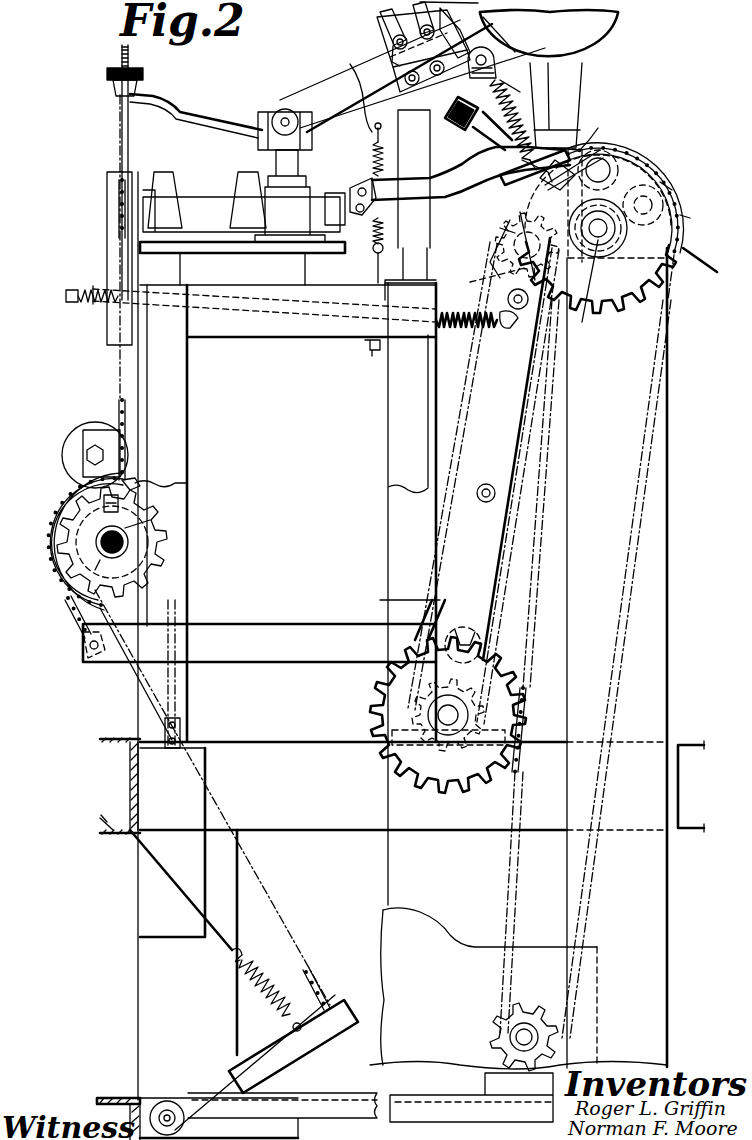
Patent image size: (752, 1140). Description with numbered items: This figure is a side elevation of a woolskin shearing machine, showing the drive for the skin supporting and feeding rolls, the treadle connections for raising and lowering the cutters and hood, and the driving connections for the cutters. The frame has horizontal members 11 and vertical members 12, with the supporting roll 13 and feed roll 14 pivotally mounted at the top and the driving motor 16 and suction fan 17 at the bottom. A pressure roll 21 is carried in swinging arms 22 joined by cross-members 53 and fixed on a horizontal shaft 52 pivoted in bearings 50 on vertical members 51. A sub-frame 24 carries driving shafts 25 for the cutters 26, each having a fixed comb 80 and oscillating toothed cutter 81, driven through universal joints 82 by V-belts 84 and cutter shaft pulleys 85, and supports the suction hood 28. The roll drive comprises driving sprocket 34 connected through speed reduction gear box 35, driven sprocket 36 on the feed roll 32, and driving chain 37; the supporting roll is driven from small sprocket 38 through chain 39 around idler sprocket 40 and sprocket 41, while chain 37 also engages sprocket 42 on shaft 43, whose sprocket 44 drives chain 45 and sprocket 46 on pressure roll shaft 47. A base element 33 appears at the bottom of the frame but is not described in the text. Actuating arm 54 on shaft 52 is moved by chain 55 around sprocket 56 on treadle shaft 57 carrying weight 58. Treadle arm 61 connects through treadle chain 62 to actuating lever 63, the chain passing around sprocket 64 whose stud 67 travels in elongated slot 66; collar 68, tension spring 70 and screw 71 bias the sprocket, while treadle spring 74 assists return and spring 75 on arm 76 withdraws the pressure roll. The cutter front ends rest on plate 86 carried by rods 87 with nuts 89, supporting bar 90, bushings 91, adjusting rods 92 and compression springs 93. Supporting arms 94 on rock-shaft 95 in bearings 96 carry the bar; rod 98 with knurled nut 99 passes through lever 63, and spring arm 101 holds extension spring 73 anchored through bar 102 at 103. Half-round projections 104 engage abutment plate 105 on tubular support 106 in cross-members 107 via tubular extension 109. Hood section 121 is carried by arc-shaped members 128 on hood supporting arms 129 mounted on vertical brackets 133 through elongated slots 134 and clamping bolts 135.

The horizontal members 11 is at (133, 777).
The vertical members 12 is at (660, 490).
The supporting roll 13 is at (605, 200).
The feed roll 14 is at (676, 300).
The driving motor 16 is at (404, 910).
The suction fan 17 is at (506, 322).
The pressure roll 21 is at (528, 242).
The swinging arms 22 is at (505, 446).
The sub-frame 24 is at (236, 250).
The driving shafts 25 is at (204, 204).
The cutters 26 is at (458, 182).
The suction hood 28 is at (580, 88).
The feed roll reduced diameter portion 32 is at (596, 250).
The base 33 is at (508, 1122).
The driving sprocket 34 is at (526, 1010).
The speed reduction gear box 35 is at (520, 948).
The driven sprocket 36 is at (612, 300).
The driving chain 37 is at (526, 698).
The small sprocket 38 is at (648, 185).
The chain 39 is at (660, 178).
The idler sprocket 40 is at (675, 203).
The sprocket 41 is at (602, 152).
The sprocket 42 is at (440, 785).
The shaft 43 is at (440, 722).
The sprocket 44 is at (524, 686).
The chain 45 is at (468, 396).
The sprocket 46 is at (515, 238).
The pressure roll shaft 47 is at (470, 280).
The bearings 50 is at (380, 600).
The vertical members 51 is at (160, 362).
The horizontal shaft 52 is at (466, 630).
The cross-members 53 is at (506, 298).
The actuating arm 54 is at (288, 624).
The chain 55 is at (52, 538).
The sprocket 56 is at (168, 585).
The treadle shaft 57 is at (70, 592).
The weight 58 is at (148, 888).
The treadle arm 61 is at (306, 1060).
The treadle chain 62 is at (118, 360).
The actuating lever 63 is at (178, 98).
The sprocket 64 is at (187, 484).
The elongated slot 66 is at (78, 470).
The stud 67 is at (138, 474).
The collar 68 is at (160, 512).
The tension spring 70 is at (76, 504).
The screw 71 is at (160, 556).
The extension spring 73 is at (374, 164).
The treadle spring 74 is at (302, 972).
The spring 75 is at (462, 330).
The arm 76 is at (70, 292).
The fixed comb 80 is at (572, 148).
The oscillating toothed cutter 81 is at (570, 142).
The universal joints 82 is at (356, 190).
The V-belts 84 is at (128, 250).
The cutter shaft pulleys 85 is at (121, 185).
The plate 86 is at (522, 186).
The rods 87 is at (522, 95).
The nut 89 is at (540, 170).
The supporting bar 90 is at (505, 70).
The bushing 91 is at (496, 60).
The adjusting rod 92 is at (478, 28).
The compression spring 93 is at (530, 120).
The supporting arms 94 is at (352, 72).
The rock-shaft 95 is at (286, 109).
The bearings 96 is at (270, 150).
The rod 98 is at (121, 145).
The knurled nut 99 is at (118, 58).
The spring arm 101 is at (345, 105).
The bar 102 is at (378, 262).
The anchorage 103 is at (367, 346).
The half-round projections 104 is at (423, 100).
The abutment plate 105 is at (470, 126).
The tubular support 106 is at (405, 270).
The cross-members 107 is at (425, 300).
The tubular extension 109 is at (500, 232).
The horizontal section 121 is at (612, 24).
The arc-shaped members 128 is at (446, 14).
The hood supporting arms 129 is at (388, 32).
The vertical brackets 133 is at (395, 80).
The elongated slots 134 is at (410, 10).
The clamping bolts 135 is at (392, 62).